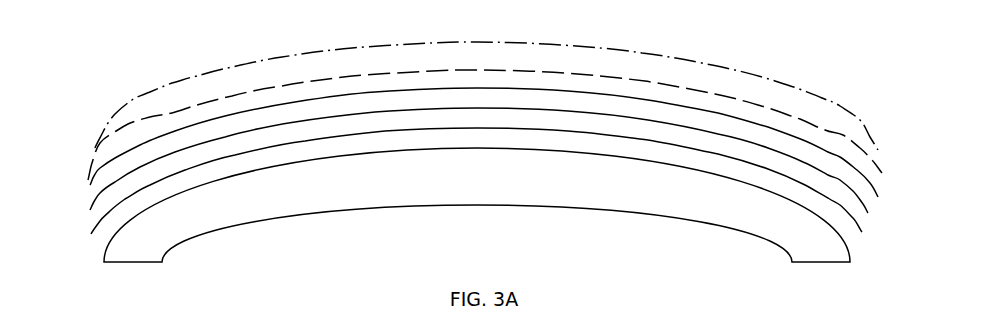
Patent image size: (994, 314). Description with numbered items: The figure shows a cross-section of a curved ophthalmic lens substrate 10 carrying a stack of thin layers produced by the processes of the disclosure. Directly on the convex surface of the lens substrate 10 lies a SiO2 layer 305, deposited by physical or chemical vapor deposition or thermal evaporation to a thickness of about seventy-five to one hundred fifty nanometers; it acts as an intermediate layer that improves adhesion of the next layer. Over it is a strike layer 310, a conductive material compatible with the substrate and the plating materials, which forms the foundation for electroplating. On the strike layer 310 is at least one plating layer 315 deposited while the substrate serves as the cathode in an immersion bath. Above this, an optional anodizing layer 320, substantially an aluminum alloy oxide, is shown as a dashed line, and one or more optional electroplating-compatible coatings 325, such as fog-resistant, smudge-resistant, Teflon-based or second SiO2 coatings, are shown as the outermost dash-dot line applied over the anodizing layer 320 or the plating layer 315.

The lens substrate 10 is at (752, 235).
The SiO2 layer 305 is at (91, 234).
The strike layer 310 is at (90, 210).
The plating layer 315 is at (90, 184).
The anodizing layer 320 is at (108, 140).
The electroplating-compatible coatings 325 is at (861, 85).